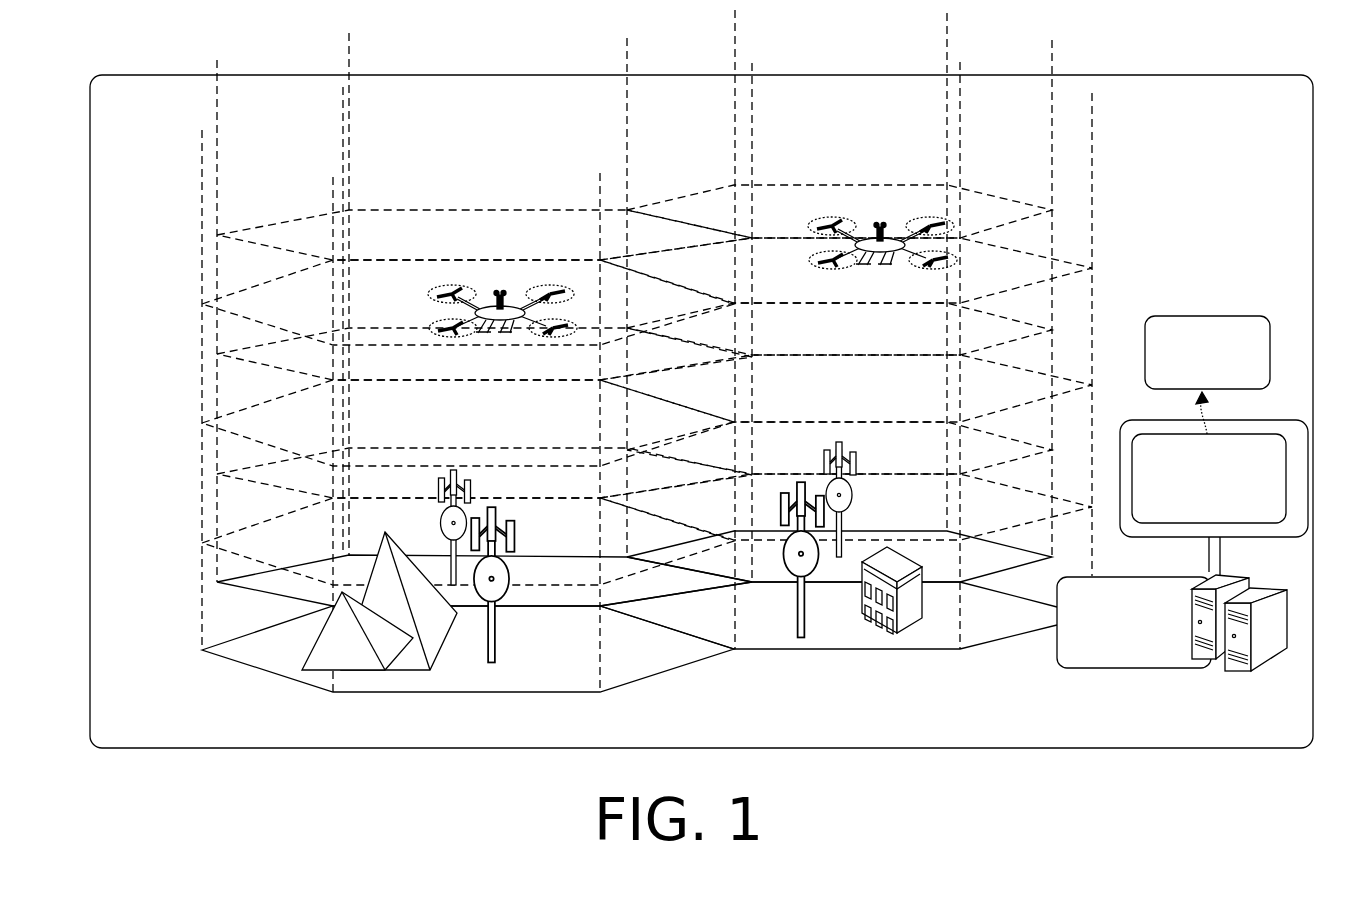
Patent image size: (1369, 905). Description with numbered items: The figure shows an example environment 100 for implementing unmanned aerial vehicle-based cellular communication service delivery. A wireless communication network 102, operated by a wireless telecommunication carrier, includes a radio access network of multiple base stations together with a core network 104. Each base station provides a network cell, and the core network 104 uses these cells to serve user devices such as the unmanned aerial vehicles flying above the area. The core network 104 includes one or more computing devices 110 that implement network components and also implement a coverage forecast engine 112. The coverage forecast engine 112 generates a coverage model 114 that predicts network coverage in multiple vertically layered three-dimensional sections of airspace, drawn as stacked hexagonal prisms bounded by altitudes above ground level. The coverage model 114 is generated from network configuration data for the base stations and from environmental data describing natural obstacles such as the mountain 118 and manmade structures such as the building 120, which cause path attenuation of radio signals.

The environment 100 is at (183, 46).
The wireless communication network 102 is at (701, 411).
The core network 104 is at (1134, 622).
The computing devices 110 is at (1238, 576).
The coverage forecast engine 112 is at (1214, 478).
The coverage model 114 is at (1207, 375).
The mountain 118 is at (413, 672).
The building 120 is at (905, 630).